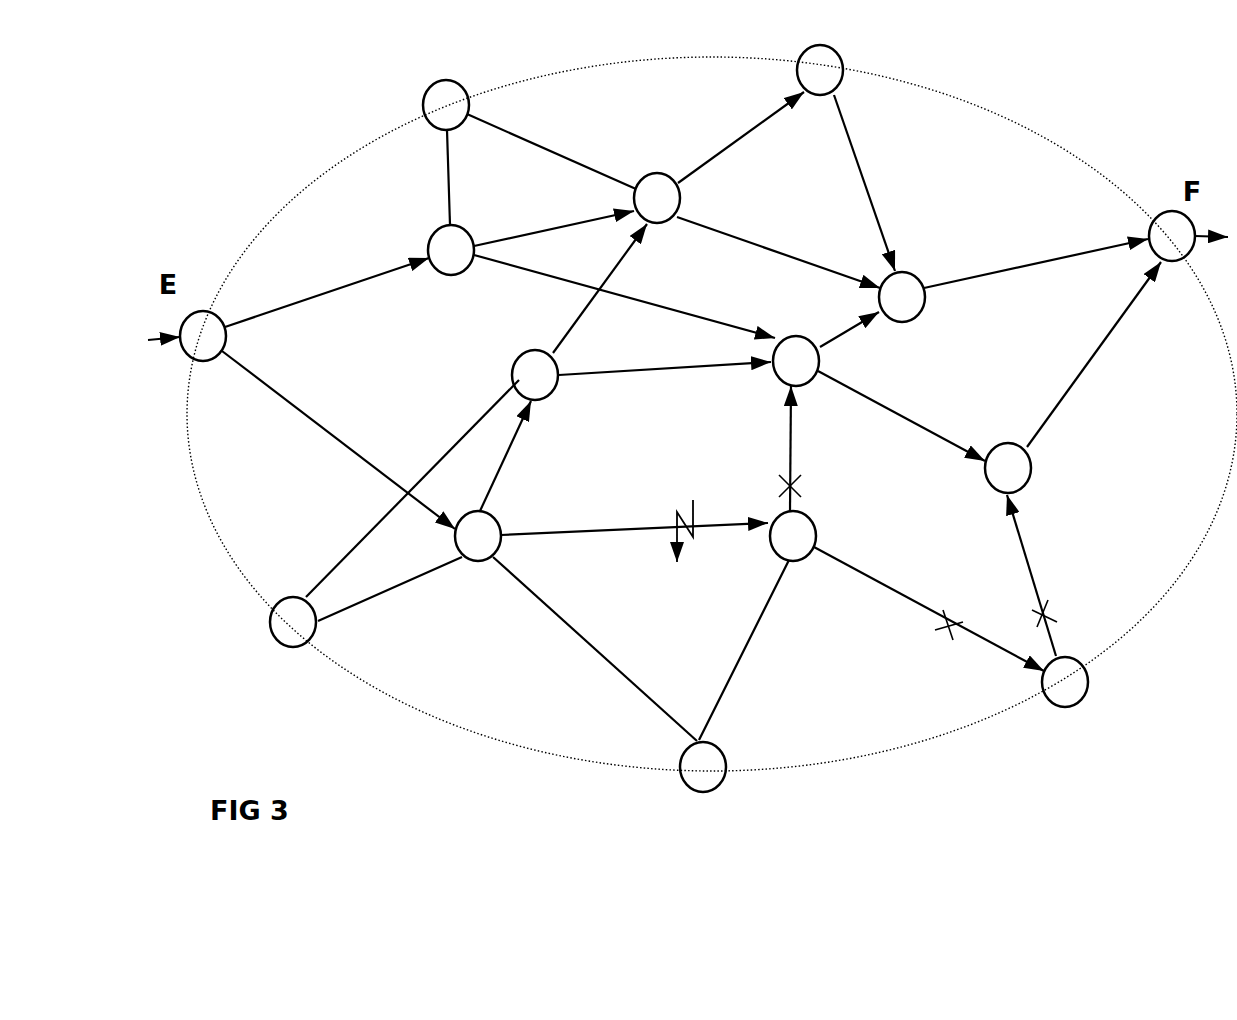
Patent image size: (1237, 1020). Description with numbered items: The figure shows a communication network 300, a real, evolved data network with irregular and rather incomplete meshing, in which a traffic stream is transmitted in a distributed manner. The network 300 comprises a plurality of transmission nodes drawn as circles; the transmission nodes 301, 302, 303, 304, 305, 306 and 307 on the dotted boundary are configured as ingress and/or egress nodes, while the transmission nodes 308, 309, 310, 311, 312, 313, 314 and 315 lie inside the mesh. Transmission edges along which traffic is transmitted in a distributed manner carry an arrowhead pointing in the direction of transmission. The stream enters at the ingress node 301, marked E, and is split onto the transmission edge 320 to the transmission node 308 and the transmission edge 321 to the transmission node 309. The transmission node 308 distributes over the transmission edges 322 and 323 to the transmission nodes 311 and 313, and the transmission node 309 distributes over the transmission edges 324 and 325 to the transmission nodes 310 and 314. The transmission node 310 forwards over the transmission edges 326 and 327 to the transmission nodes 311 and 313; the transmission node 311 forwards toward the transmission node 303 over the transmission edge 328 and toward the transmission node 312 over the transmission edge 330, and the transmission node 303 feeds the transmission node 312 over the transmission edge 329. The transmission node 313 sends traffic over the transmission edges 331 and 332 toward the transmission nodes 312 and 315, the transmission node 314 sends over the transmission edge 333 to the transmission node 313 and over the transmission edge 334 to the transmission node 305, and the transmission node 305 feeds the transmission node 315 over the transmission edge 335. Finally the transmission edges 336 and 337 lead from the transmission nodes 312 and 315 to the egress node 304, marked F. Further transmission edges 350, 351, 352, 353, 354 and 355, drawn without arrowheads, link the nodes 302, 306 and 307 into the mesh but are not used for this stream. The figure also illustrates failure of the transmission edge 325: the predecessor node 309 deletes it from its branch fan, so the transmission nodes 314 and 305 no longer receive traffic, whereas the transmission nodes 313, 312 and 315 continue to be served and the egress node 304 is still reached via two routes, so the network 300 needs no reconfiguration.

The communication network 300 is at (261, 506).
The ingress node 301 is at (203, 336).
The transmission node 302 is at (446, 105).
The transmission node 303 is at (820, 70).
The egress node 304 is at (1172, 236).
The transmission node 305 is at (1065, 682).
The transmission node 306 is at (703, 767).
The transmission node 307 is at (293, 622).
The transmission node 308 is at (451, 250).
The transmission node 309 is at (478, 536).
The transmission node 310 is at (535, 375).
The transmission node 311 is at (657, 198).
The transmission node 312 is at (902, 297).
The transmission node 313 is at (796, 361).
The transmission node 314 is at (793, 536).
The transmission node 315 is at (1008, 468).
The transmission edge 320 is at (327, 292).
The transmission edge 321 is at (338, 440).
The transmission edge 322 is at (554, 223).
The transmission edge 323 is at (624, 294).
The transmission edge 324 is at (513, 456).
The transmission edge 325 is at (634, 531).
The transmission edge 326 is at (588, 288).
The transmission edge 327 is at (665, 359).
The link 328 is at (741, 137).
The transmission edge 329 is at (873, 183).
The transmission edge 330 is at (778, 252).
The transmission edge 331 is at (844, 328).
The link 332 is at (901, 416).
The transmission edge 333 is at (805, 448).
The transmission edge 334 is at (929, 609).
The transmission edge 335 is at (1040, 575).
The transmission edge 336 is at (1036, 263).
The transmission edge 337 is at (1094, 354).
The link 350 is at (428, 177).
The link 351 is at (551, 147).
The link 352 is at (410, 488).
The link 353 is at (390, 589).
The link 354 is at (595, 649).
The link 355 is at (744, 650).